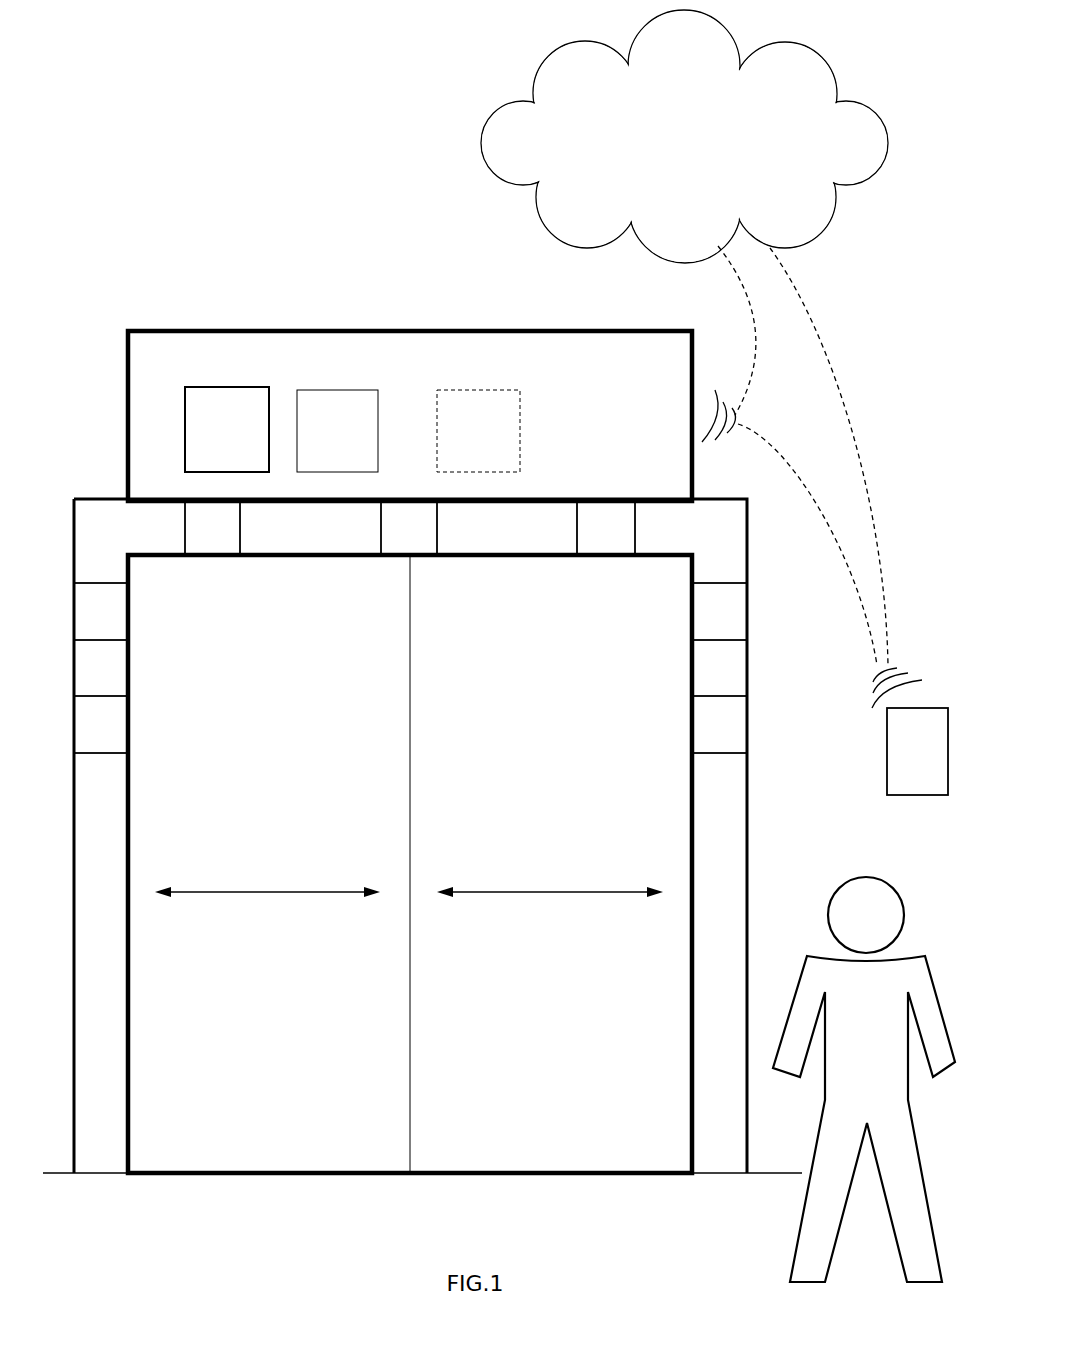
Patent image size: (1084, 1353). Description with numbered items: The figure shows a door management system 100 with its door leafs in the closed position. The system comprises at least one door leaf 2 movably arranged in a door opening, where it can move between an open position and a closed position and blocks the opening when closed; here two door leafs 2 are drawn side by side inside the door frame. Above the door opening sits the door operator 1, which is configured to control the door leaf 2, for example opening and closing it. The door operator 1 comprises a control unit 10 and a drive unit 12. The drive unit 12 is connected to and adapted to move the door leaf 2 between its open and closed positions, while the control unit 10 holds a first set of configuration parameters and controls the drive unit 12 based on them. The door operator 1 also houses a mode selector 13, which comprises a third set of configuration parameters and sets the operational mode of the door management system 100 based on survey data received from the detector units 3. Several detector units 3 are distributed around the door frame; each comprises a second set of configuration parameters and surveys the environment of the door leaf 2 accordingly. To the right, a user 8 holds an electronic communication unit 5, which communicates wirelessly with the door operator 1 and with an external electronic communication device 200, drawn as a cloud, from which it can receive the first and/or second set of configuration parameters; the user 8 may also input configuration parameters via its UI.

The door management system 100 is at (378, 290).
The external electronic communication device 200 is at (684, 136).
The door operator 1 is at (432, 416).
The control unit 10 is at (227, 429).
The drive unit 12 is at (337, 431).
The mode selector 13 is at (478, 431).
The detector unit 3 is at (410, 627).
The door leaf 2 is at (410, 864).
The electronic communication unit 5 is at (910, 731).
The user 8 is at (868, 862).